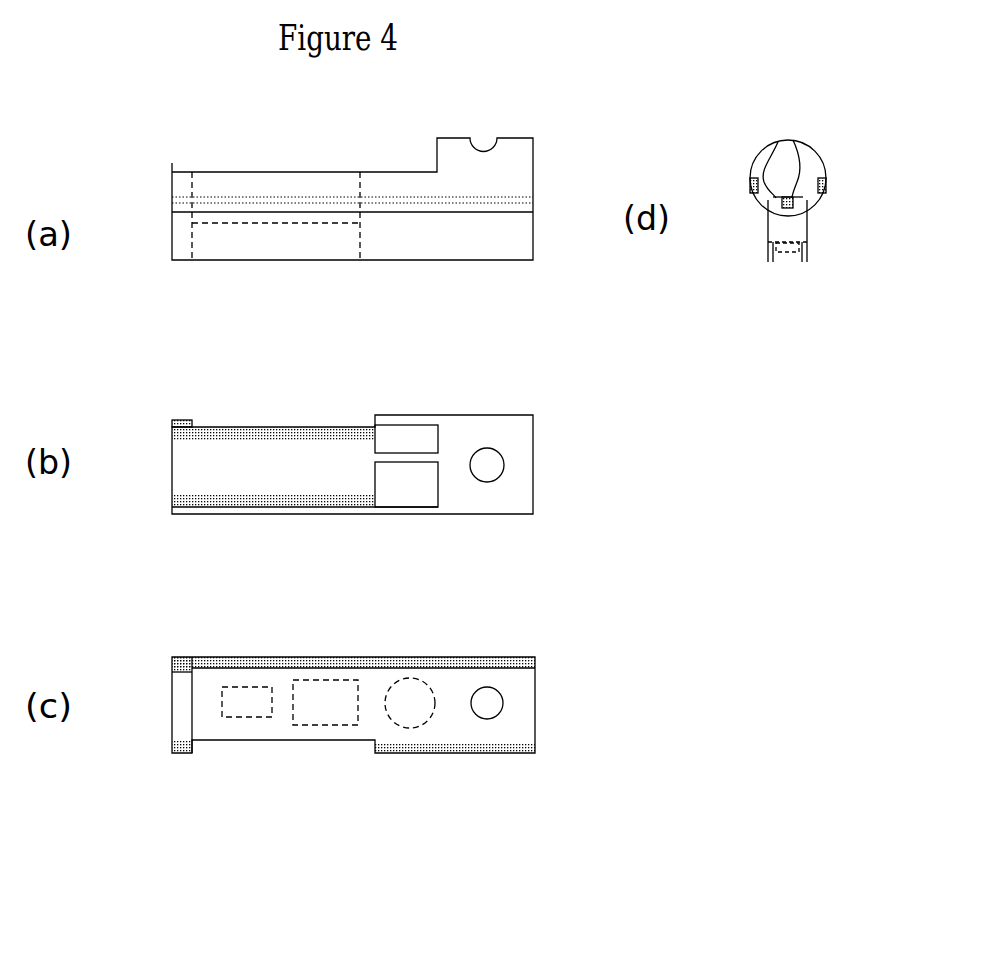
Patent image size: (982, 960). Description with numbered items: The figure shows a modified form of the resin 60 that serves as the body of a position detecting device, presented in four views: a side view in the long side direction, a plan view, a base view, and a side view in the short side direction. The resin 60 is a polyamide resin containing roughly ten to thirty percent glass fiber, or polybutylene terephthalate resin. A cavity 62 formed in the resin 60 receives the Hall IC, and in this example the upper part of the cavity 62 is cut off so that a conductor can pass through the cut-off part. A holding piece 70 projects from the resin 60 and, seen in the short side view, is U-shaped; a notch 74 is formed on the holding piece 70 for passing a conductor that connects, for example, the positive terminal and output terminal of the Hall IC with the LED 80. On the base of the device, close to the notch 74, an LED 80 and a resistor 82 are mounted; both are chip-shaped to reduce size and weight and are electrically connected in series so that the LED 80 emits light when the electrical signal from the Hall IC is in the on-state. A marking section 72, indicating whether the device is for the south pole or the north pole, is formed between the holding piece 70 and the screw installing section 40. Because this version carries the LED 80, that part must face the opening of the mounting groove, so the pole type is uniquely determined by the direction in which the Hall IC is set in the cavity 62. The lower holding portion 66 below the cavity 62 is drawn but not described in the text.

The screw installing section 40 is at (484, 151).
The resin 60 is at (545, 185).
The cavity 62 is at (393, 427).
The lower holding portion 66 is at (377, 455).
The holding piece 70 is at (252, 177).
The marking section 72 is at (407, 716).
The notch 74 is at (290, 200).
The LED 80 is at (327, 716).
The resistor 82 is at (250, 716).